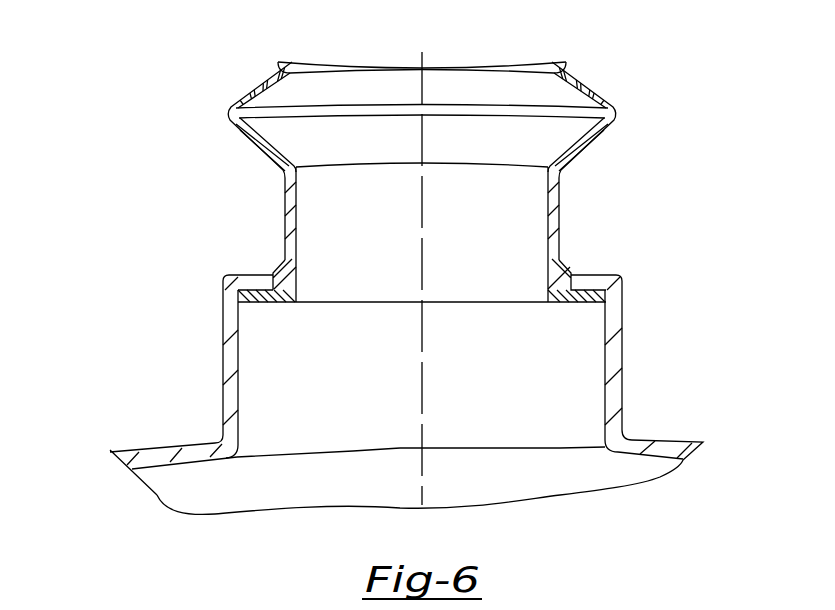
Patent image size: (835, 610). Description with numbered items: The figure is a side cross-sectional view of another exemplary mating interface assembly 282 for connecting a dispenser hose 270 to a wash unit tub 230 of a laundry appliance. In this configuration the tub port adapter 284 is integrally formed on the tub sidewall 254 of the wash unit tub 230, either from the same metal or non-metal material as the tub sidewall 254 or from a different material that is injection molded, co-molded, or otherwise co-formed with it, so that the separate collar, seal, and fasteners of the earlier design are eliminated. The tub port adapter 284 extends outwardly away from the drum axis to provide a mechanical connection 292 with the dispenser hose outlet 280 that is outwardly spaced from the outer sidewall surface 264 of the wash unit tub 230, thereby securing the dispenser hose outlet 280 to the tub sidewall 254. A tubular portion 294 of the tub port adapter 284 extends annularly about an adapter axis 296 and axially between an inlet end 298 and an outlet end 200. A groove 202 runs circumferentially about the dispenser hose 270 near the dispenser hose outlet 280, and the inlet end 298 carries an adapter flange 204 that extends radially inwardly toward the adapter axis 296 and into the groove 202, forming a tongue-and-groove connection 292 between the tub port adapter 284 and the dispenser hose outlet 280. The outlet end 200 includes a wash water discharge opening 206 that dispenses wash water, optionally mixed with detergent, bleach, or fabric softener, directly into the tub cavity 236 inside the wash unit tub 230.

The mating interface assembly 282 is at (128, 113).
The adapter axis 296 is at (420, 62).
The dispenser hose 270 is at (563, 187).
The tongue-and-groove connection 292 is at (258, 262).
The adapter flange 204 is at (282, 284).
The groove 202 is at (562, 289).
The dispenser hose outlet 280 is at (287, 300).
The tubular portion 294 is at (223, 331).
The inlet end 298 is at (621, 275).
The tub port adapter 284 is at (626, 322).
The tub sidewall 254 is at (150, 458).
The outer sidewall surface 264 is at (675, 440).
The wash water discharge opening 206 is at (350, 453).
The tub cavity 236 is at (472, 490).
The wash unit tub 230 is at (210, 499).
The outlet end 200 is at (603, 446).